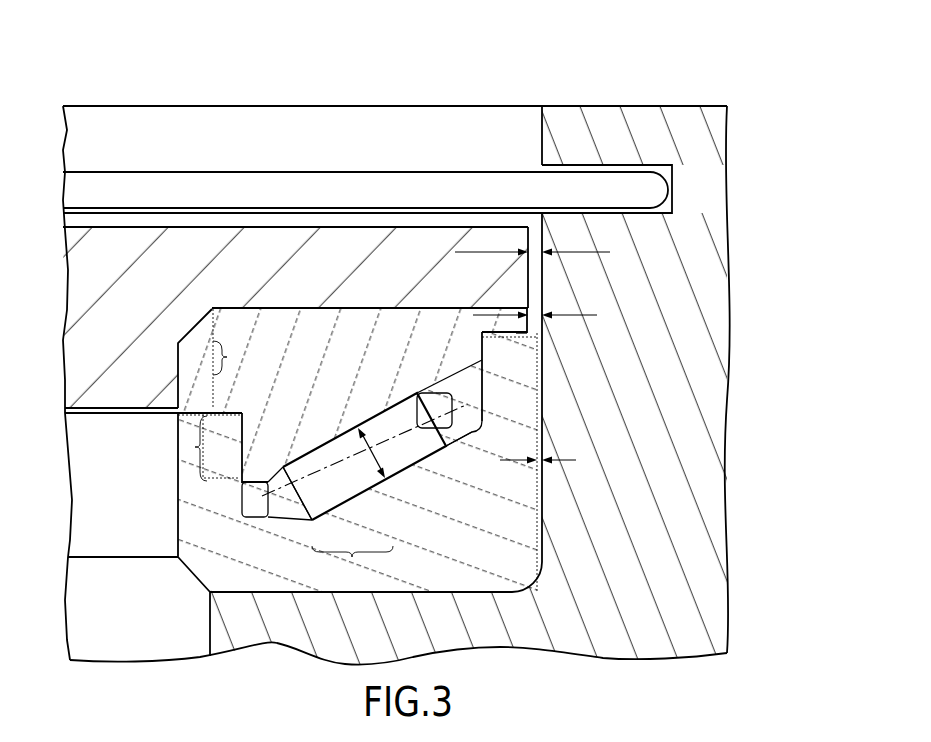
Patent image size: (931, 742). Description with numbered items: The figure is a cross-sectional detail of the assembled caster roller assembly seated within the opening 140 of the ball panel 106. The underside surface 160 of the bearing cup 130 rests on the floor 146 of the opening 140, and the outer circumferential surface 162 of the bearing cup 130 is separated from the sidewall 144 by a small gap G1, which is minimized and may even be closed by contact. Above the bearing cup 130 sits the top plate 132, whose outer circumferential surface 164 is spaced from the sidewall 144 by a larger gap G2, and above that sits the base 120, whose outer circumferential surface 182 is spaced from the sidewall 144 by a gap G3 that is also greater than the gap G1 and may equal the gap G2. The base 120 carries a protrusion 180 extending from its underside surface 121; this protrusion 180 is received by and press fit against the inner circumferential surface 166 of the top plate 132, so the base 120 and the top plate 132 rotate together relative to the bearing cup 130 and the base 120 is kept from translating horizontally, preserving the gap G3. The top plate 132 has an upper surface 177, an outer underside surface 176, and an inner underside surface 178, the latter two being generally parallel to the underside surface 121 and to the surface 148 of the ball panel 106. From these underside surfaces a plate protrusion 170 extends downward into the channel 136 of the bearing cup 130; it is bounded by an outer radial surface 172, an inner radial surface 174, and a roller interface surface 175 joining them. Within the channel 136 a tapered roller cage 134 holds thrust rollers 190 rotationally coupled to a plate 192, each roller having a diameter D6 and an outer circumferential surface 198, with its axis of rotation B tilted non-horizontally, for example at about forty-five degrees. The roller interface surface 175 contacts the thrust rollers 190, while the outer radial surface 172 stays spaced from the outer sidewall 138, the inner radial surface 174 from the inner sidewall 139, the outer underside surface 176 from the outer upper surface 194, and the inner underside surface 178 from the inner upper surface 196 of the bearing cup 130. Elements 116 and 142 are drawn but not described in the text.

The ball panel 106 is at (706, 160).
The shaft 116 is at (203, 183).
The base 120 is at (267, 276).
The underside surface 121 is at (353, 307).
The bearing cup 130 is at (427, 521).
The top plate 132 is at (313, 382).
The tapered roller cage 134 is at (357, 462).
The channel 136 is at (442, 374).
The outer sidewall 138 is at (476, 403).
The inner sidewall 139 is at (261, 518).
The opening 140 is at (375, 105).
The slot 142 is at (681, 172).
The sidewall 144 is at (542, 520).
The floor 146 is at (443, 592).
The surface 148 is at (645, 106).
The underside surface 160 is at (365, 593).
The outer circumferential surface 162 is at (545, 396).
The outer circumferential surface 164 is at (535, 323).
The inner circumferential surface 166 is at (178, 390).
The protrusion 170 is at (202, 448).
The outer radial surface 172 is at (483, 350).
The inner radial surface 174 is at (244, 522).
The roller interface surface 175 is at (413, 404).
The outer underside surface 176 is at (518, 333).
The upper surface 177 is at (308, 308).
The inner underside surface 178 is at (182, 416).
The protrusion 180 is at (236, 358).
The outer circumferential surface 182 is at (528, 270).
The thrust rollers 190 is at (372, 480).
The plate 192 is at (283, 491).
The outer upper surface 194 is at (493, 332).
The inner upper surface 196 is at (228, 411).
The outer circumferential surface 198 is at (418, 463).
The axis of rotation B is at (380, 452).
The diameter D6 is at (353, 452).
The gap G1 is at (549, 461).
The gap G2 is at (546, 315).
The gap G3 is at (544, 254).